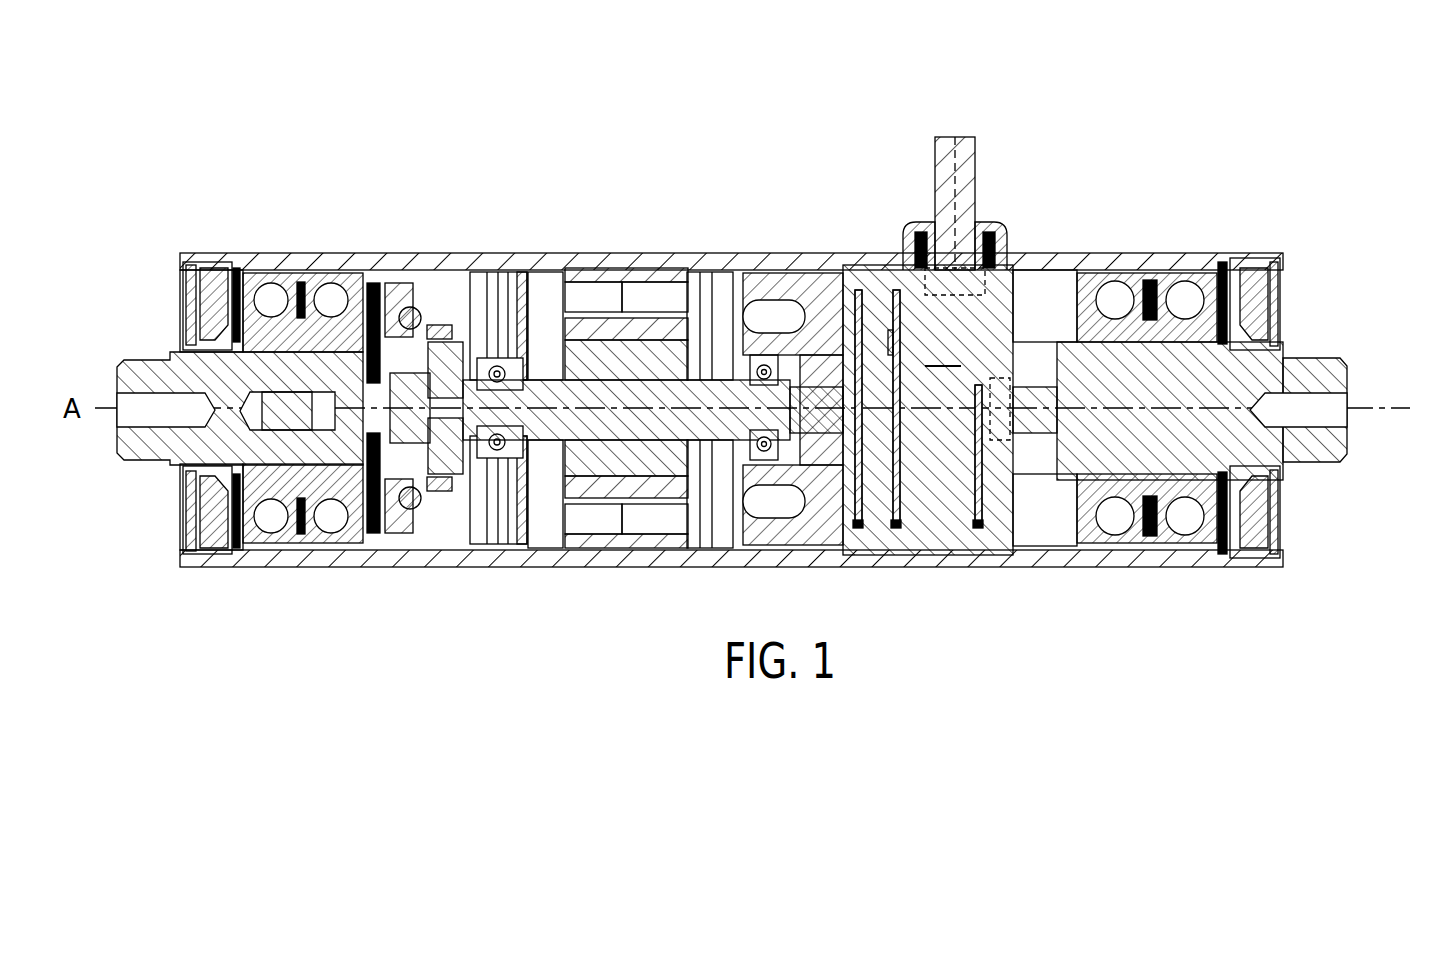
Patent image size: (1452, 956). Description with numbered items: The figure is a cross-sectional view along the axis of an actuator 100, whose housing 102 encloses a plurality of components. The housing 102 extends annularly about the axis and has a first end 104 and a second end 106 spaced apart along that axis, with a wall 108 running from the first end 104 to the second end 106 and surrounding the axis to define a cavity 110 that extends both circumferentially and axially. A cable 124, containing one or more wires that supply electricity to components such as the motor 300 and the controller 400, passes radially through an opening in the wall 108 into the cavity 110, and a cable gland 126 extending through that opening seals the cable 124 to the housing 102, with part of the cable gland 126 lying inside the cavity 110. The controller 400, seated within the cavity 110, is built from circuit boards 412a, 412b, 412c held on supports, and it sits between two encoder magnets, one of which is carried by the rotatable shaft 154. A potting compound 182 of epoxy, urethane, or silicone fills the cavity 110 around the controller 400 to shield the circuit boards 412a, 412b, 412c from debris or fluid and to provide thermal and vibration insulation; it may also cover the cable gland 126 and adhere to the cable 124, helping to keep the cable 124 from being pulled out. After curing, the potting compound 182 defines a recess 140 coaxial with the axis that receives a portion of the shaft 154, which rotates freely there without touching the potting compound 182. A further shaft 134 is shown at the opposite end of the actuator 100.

The actuator 100 is at (1038, 153).
The housing 102 is at (1104, 250).
The first end 104 is at (184, 262).
The second end 106 is at (1282, 262).
The wall 108 is at (306, 252).
The cavity 110 is at (1047, 298).
The cable 124 is at (936, 156).
The cable gland 126 is at (990, 220).
The first output shaft 134 is at (146, 462).
The recess 140 is at (1006, 452).
The shaft 154 is at (1336, 458).
The potting compound 182 is at (950, 410).
The motor 300 is at (643, 262).
The controller 400 is at (920, 402).
The circuit board 412a is at (858, 528).
The circuit board 412b is at (896, 528).
The circuit board 412c is at (979, 528).